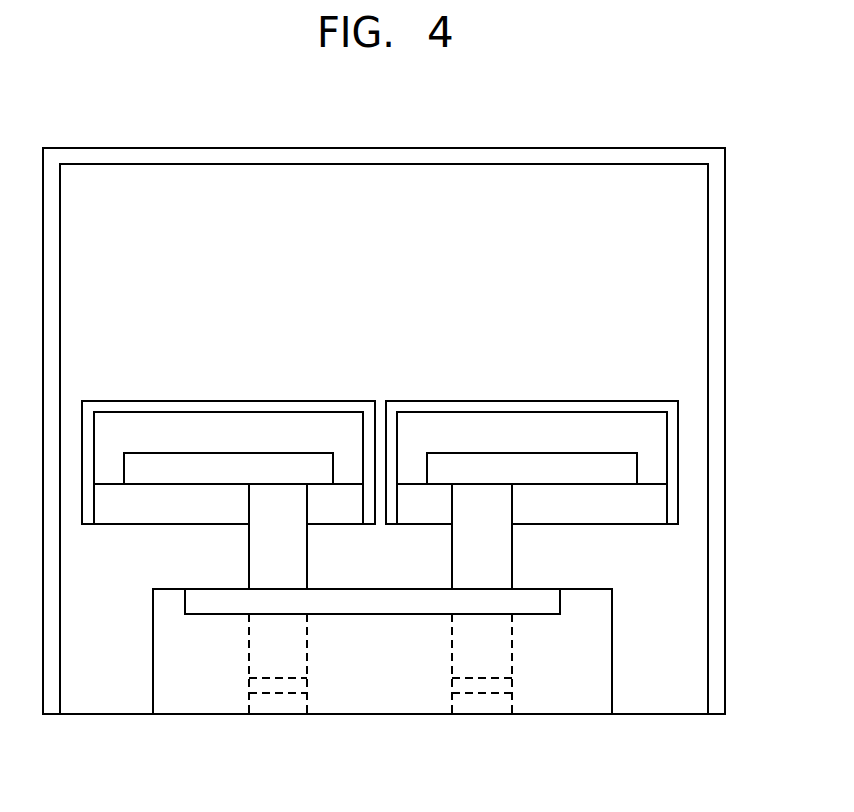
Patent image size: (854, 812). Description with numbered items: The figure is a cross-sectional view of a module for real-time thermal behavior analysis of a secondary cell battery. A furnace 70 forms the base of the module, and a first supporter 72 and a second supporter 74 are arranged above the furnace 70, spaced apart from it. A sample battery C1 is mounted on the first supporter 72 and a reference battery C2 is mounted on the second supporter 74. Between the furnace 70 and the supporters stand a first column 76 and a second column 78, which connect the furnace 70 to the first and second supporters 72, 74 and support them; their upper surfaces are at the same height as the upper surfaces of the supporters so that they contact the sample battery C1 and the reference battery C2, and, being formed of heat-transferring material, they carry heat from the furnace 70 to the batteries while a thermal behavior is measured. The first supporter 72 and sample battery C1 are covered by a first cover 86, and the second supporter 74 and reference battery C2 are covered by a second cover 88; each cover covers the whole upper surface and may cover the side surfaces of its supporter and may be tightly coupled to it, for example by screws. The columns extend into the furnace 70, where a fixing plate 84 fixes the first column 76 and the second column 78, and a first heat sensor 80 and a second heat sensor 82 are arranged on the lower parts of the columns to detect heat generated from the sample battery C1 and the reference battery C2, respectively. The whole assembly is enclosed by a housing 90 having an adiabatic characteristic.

The housing 90 is at (600, 148).
The furnace 70 is at (181, 697).
The first supporter 72 is at (107, 515).
The second supporter 74 is at (647, 515).
The first column 76 is at (262, 553).
The second column 78 is at (497, 555).
The first heat sensor 80 is at (282, 688).
The second heat sensor 82 is at (488, 688).
The fixing plate 84 is at (380, 613).
The first cover 86 is at (229, 400).
The second cover 88 is at (532, 400).
The sample battery C1 is at (160, 467).
The reference battery C2 is at (463, 467).